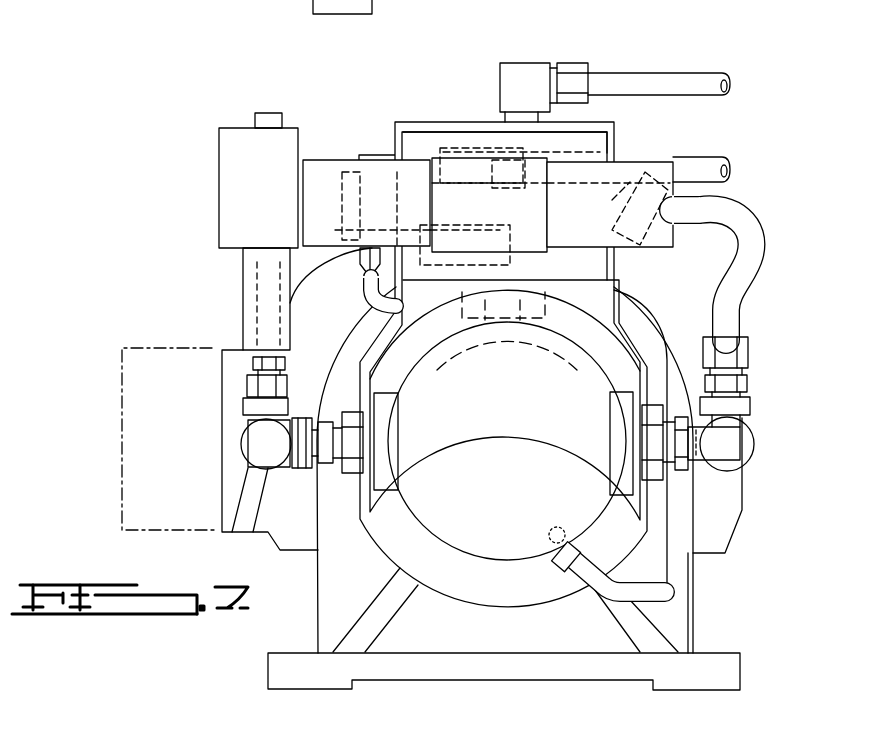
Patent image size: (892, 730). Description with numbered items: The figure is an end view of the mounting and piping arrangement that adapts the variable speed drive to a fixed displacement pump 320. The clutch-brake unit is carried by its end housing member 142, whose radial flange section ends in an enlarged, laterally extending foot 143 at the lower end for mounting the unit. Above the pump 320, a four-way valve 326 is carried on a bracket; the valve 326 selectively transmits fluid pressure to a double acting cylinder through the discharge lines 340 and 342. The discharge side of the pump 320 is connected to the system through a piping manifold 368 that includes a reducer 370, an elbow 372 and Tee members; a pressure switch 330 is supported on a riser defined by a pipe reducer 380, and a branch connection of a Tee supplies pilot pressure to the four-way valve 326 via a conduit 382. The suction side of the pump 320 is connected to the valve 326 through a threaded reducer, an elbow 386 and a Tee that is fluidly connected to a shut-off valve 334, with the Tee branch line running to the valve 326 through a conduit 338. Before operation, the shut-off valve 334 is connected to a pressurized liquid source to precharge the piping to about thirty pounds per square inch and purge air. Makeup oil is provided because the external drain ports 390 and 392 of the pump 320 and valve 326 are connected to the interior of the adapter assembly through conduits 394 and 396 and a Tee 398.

The end housing member 142 is at (317, 562).
The foot 143 is at (740, 667).
The fixed displacement pump 320 is at (540, 441).
The four-way valve 326 is at (662, 167).
The pressure switch 330 is at (228, 180).
The shut-off valve 334 is at (748, 467).
The conduit 338 is at (733, 223).
The discharge line 340 is at (660, 72).
The discharge line 342 is at (713, 163).
The piping manifold 368 is at (613, 130).
The reducer 370 is at (337, 466).
The elbow 372 is at (255, 442).
The pipe reducer 380 is at (248, 368).
The conduit 382 is at (303, 262).
The elbow 386 is at (732, 440).
The external drain port 390 is at (548, 557).
The external drain port 392 is at (372, 248).
The conduit 394 is at (373, 338).
The conduit 396 is at (648, 292).
The Tee 398 is at (517, 282).